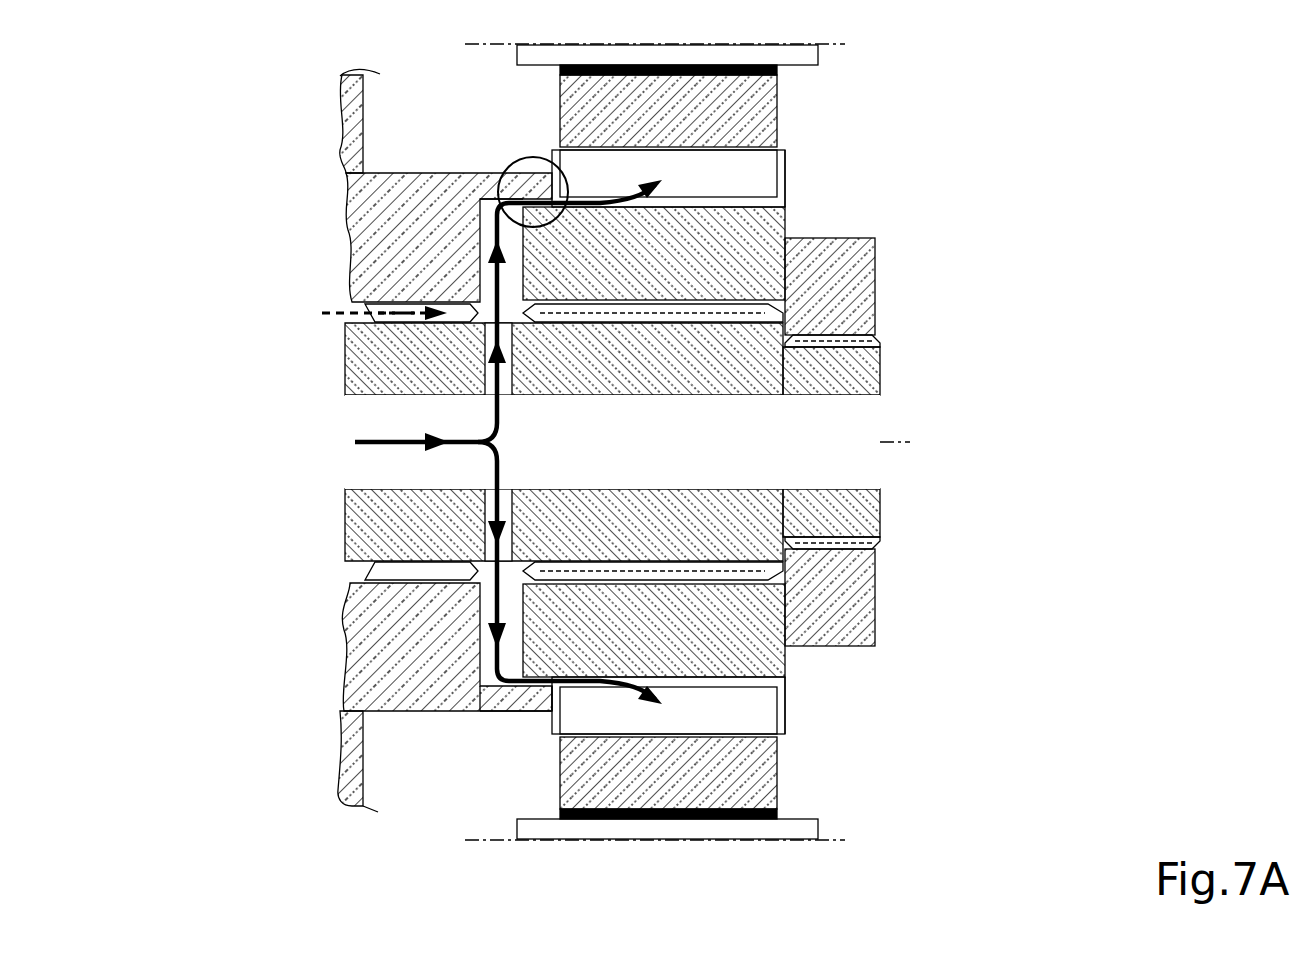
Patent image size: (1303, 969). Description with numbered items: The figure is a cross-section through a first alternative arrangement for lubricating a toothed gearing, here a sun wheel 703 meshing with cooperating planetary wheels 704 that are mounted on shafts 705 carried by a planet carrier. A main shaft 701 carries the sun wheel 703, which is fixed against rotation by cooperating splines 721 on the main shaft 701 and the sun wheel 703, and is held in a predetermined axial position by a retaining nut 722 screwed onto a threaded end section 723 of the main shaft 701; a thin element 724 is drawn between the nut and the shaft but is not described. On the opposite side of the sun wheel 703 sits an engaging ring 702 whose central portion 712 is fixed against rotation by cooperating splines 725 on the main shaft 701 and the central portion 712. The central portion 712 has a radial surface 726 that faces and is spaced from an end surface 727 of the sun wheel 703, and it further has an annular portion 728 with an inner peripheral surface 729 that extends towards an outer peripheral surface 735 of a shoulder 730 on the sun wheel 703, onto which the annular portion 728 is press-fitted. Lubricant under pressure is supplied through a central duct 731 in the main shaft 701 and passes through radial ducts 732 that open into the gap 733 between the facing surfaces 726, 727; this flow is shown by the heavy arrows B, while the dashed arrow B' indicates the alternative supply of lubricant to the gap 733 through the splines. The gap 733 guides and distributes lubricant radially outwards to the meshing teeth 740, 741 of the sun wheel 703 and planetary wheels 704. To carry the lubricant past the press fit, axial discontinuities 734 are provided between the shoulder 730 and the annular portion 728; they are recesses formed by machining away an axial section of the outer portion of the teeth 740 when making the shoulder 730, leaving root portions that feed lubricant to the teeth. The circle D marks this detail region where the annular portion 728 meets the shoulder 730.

The main shaft 701 is at (315, 355).
The engaging ring 702 is at (385, 75).
The sun wheel 703 is at (800, 218).
The planetary wheels 704 is at (790, 106).
The shafts 705 is at (805, 56).
The central portion 712 is at (378, 210).
The cooperating splines 721 is at (772, 572).
The retaining nut 722 is at (890, 280).
The threaded end section 723 is at (865, 368).
The thin bearing strip 724 is at (890, 340).
The cooperating splines 725 is at (345, 575).
The radial surface 726 is at (478, 636).
The end surface 727 is at (465, 667).
The annular portion 728 is at (462, 713).
The inner peripheral surface 729 is at (380, 812).
The shoulder 730 is at (543, 176).
The central duct 731 is at (360, 465).
The radial ducts 732 is at (465, 348).
The gap 733 is at (485, 272).
The axial discontinuities 734 is at (482, 713).
The outer peripheral surface 735 is at (537, 700).
The teeth 740 is at (790, 180).
The teeth 741 is at (760, 165).
The detail circle D is at (500, 158).
The flow path B is at (473, 442).
The dashed arrow B' is at (347, 288).